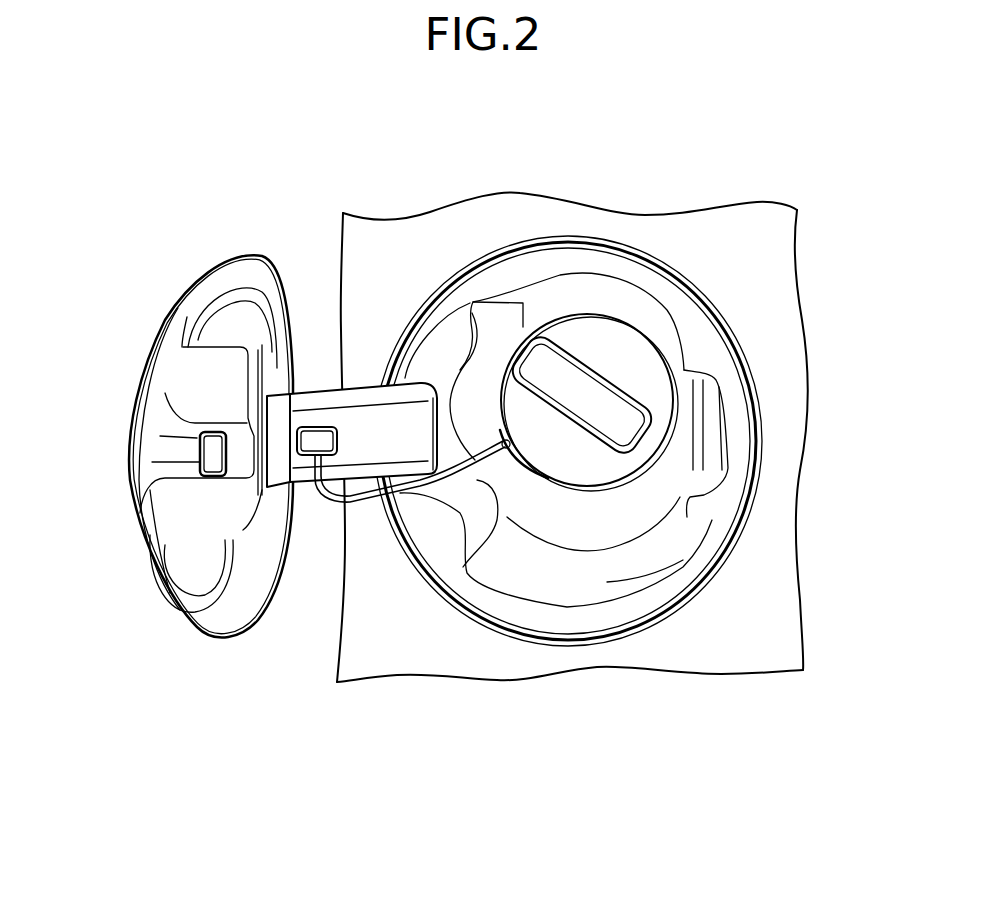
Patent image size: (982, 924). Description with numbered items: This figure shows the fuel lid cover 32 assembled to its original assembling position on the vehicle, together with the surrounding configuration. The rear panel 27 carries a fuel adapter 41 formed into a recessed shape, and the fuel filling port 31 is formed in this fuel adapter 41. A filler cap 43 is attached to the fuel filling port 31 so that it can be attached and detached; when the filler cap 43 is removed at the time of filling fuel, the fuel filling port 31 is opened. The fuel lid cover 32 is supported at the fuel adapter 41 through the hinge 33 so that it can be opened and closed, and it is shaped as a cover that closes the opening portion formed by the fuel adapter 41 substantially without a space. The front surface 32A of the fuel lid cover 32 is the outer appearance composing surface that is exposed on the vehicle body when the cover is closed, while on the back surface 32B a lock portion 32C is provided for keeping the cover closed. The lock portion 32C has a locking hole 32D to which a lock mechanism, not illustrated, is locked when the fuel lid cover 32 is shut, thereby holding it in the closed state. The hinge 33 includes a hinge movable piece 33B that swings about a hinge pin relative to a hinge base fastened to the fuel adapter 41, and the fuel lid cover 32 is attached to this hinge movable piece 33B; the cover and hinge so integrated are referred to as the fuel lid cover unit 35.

The rear panel 27 is at (745, 628).
The fuel filling port 31 is at (670, 335).
The fuel lid cover 32 is at (190, 421).
The front surface 32A is at (150, 364).
The back surface 32B is at (233, 549).
The lock portion 32C is at (228, 547).
The locking hole 32D is at (187, 460).
The hinge 33 is at (388, 308).
The hinge movable piece 33B is at (354, 427).
The fuel lid cover unit 35 is at (280, 118).
The fuel adapter 41 is at (547, 563).
The filler cap 43 is at (592, 335).